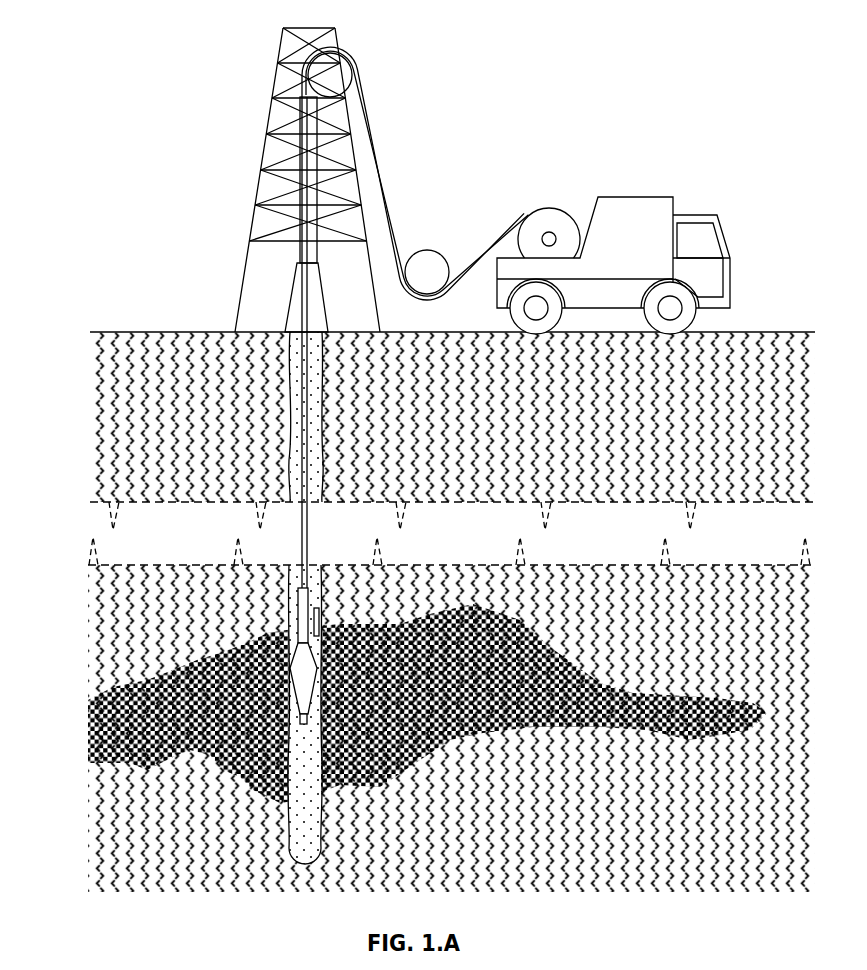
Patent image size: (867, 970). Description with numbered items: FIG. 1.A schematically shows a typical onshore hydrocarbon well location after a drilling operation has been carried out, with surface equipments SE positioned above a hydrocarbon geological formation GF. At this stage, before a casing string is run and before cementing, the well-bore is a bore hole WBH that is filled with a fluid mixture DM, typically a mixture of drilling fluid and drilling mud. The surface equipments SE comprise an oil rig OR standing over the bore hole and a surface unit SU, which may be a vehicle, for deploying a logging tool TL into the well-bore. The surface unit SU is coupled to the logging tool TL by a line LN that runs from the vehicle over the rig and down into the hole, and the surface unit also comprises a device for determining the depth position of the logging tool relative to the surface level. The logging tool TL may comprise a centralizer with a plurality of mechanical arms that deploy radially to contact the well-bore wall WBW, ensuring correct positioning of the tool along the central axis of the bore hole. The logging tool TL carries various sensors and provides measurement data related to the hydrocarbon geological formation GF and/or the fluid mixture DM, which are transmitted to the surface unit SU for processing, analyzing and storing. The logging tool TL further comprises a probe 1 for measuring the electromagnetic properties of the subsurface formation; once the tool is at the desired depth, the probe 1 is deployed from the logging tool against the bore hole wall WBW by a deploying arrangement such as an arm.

The oil rig OR is at (262, 120).
The surface equipments SE is at (437, 130).
The surface unit SU is at (597, 195).
The line LN is at (305, 347).
The bore hole WBH is at (290, 395).
The well-bore wall WBW is at (320, 475).
The logging tool TL is at (298, 610).
The probe 1 is at (334, 620).
The hydrocarbon geological formation GF is at (155, 720).
The fluid mixture DM is at (305, 830).